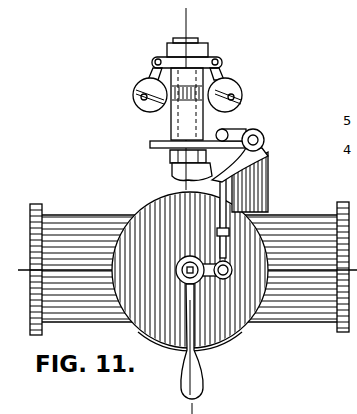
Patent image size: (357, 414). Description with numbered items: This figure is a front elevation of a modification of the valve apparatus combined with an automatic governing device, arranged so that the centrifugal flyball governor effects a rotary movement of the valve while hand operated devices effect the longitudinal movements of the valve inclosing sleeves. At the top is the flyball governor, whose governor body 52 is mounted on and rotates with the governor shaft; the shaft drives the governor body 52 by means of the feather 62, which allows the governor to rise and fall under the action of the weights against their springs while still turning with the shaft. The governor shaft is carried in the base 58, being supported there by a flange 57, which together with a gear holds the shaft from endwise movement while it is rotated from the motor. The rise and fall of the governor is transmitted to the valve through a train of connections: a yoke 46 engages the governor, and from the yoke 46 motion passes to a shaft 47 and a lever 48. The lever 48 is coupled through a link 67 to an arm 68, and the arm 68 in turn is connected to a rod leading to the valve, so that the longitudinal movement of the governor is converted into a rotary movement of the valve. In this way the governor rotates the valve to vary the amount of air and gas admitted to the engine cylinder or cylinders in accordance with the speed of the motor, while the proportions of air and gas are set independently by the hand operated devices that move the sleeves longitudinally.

The yoke 46 is at (180, 147).
The shaft 47 is at (265, 138).
The lever 48 is at (262, 128).
The governor body 52 is at (172, 120).
The flange 57 is at (172, 158).
The base 58 is at (173, 170).
The feather 62 is at (205, 124).
The link 67 is at (246, 203).
The arm 68 is at (210, 282).